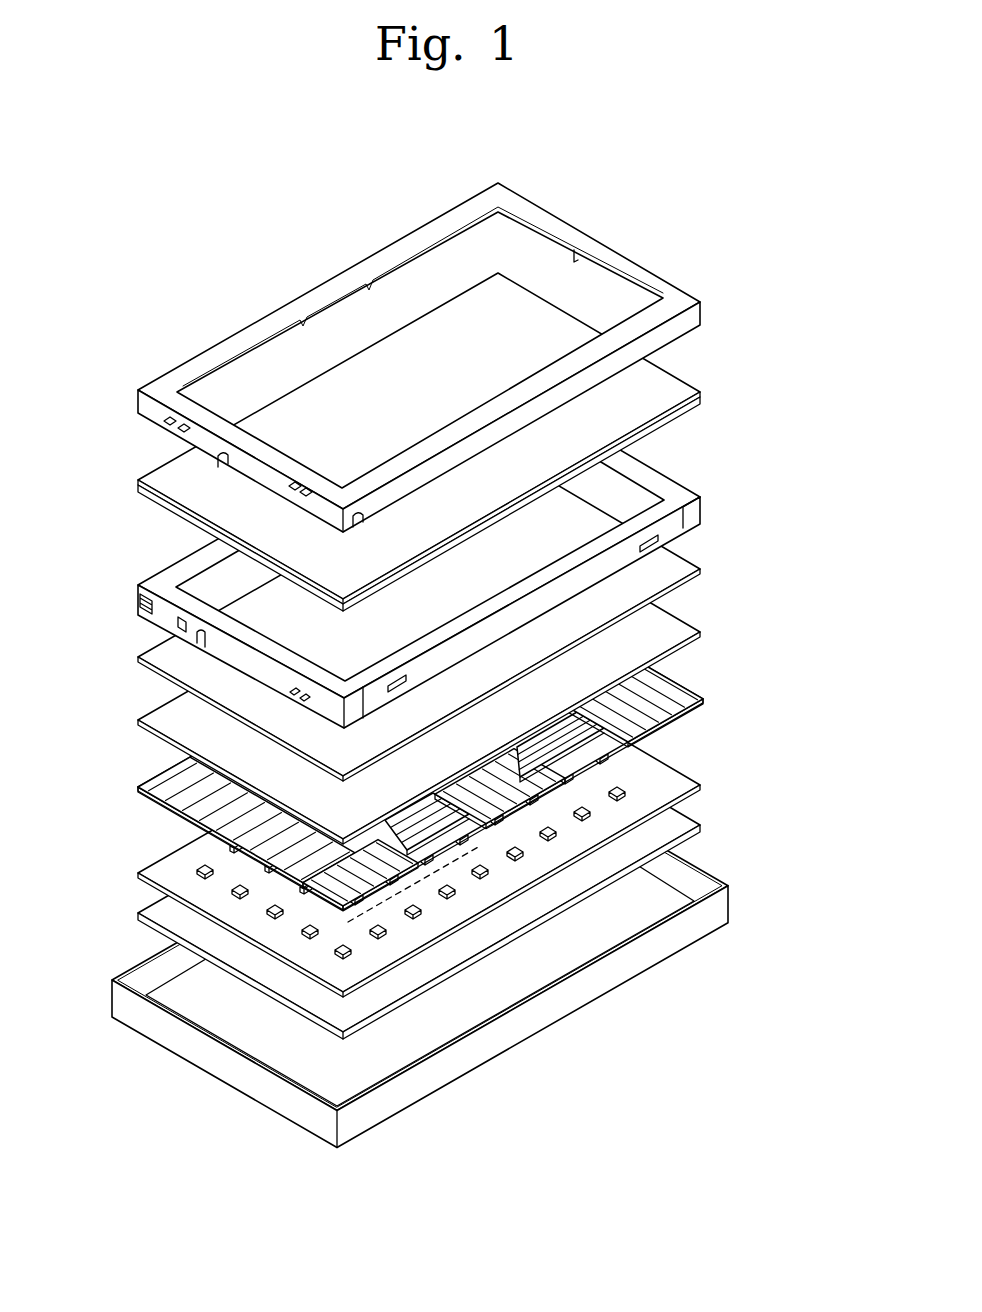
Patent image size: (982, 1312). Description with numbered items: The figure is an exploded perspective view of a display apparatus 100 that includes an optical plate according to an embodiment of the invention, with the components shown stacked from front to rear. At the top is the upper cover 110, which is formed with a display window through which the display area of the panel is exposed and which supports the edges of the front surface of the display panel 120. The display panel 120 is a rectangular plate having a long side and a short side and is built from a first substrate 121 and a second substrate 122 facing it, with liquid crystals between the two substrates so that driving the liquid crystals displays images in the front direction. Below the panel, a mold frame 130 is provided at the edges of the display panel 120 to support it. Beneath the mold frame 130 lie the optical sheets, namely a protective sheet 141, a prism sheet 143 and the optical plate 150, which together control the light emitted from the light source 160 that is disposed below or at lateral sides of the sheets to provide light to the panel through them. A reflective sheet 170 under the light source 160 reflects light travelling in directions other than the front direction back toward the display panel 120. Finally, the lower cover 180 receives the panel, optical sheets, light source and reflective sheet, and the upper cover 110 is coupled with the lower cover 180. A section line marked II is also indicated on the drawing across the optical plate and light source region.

The display apparatus 100 is at (358, 230).
The upper cover 110 is at (673, 330).
The display panel 120 is at (493, 442).
The first substrate 121 is at (673, 424).
The second substrate 122 is at (673, 398).
The mold frame 130 is at (673, 503).
The protective sheet 141 is at (673, 577).
The prism sheet 143 is at (673, 640).
The optical plate 150 is at (673, 700).
The light source 160 is at (205, 866).
The reflective sheet 170 is at (673, 830).
The lower cover 180 is at (597, 928).
The section line II is at (393, 890).